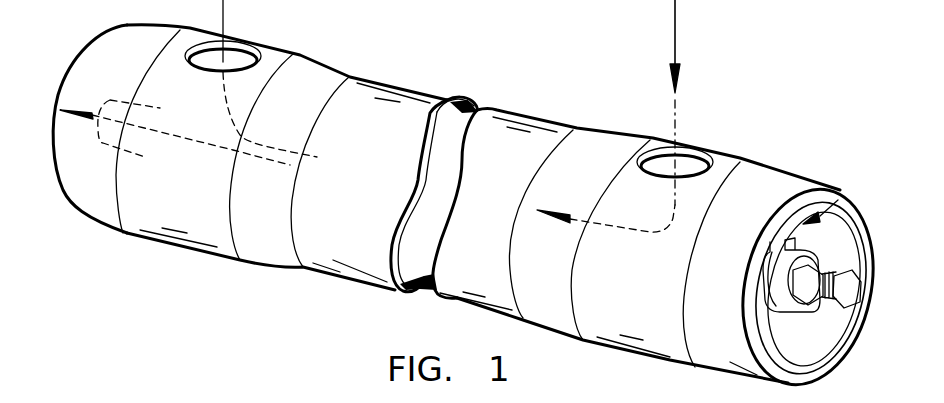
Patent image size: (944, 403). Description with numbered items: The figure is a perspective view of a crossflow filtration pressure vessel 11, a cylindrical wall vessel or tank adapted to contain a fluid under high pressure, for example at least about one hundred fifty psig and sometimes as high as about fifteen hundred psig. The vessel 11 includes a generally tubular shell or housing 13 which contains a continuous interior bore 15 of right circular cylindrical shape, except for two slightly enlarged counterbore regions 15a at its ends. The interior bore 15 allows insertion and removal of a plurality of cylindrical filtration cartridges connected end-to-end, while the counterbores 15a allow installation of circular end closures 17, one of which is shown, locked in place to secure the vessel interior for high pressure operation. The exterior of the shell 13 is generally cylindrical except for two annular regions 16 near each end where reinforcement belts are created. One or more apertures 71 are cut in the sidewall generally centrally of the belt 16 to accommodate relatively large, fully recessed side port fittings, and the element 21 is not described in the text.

The pressure vessel 11 is at (232, 270).
The tubular shell 13 is at (393, 83).
The interior bore 15 is at (418, 283).
The counterbore region 15a is at (815, 355).
The reinforcement belt 16 is at (187, 208).
The end closure 17 is at (838, 198).
The aperture 71 is at (238, 45).
The base 21 is at (109, 395).